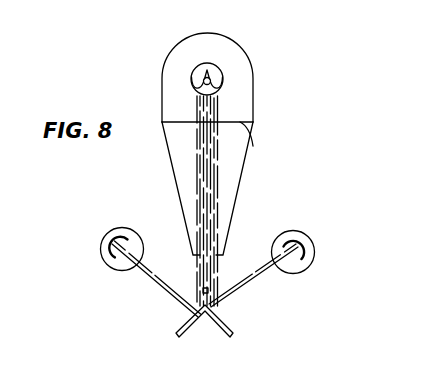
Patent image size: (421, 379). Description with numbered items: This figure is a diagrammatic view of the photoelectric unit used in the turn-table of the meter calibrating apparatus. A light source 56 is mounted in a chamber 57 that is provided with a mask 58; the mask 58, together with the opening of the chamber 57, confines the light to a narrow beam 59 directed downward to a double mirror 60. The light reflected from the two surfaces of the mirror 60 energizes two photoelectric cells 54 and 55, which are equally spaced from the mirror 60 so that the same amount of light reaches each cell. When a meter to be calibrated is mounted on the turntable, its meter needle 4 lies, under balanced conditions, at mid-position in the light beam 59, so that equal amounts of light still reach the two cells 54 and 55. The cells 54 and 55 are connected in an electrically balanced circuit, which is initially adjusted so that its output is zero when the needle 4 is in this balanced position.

The meter needle 4 is at (203, 290).
The photoelectric cell 54 is at (101, 254).
The photoelectric cell 55 is at (314, 255).
The light source 56 is at (191, 81).
The chamber 57 is at (253, 105).
The mask 58 is at (253, 146).
The narrow beam 59 is at (217, 266).
The double mirror 60 is at (190, 324).